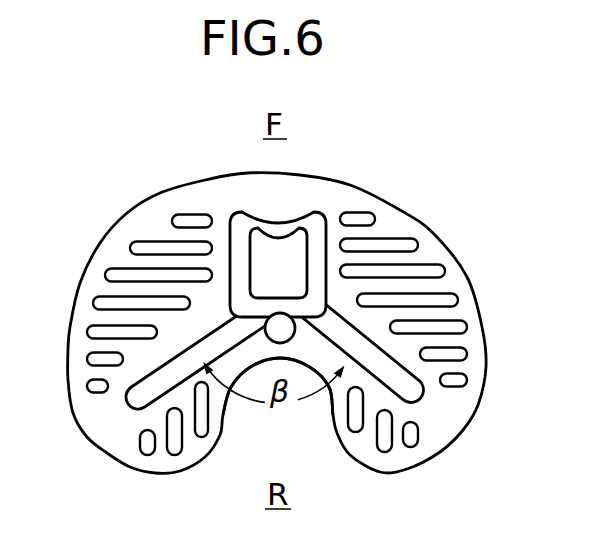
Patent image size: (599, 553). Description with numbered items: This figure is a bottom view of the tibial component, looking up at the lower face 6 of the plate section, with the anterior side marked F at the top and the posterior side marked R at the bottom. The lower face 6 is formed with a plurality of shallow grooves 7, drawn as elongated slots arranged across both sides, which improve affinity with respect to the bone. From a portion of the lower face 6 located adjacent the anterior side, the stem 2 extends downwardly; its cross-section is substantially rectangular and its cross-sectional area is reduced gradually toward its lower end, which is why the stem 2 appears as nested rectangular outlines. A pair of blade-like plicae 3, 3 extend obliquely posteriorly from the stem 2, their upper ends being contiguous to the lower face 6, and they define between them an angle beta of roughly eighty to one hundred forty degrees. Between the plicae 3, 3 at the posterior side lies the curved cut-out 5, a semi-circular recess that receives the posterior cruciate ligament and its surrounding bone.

The stem 2 is at (304, 210).
The blade-like plicae 3 is at (130, 400).
The curved cut-out 5 is at (333, 410).
The lower face 6 is at (222, 193).
The shallow grooves 7 is at (420, 237).